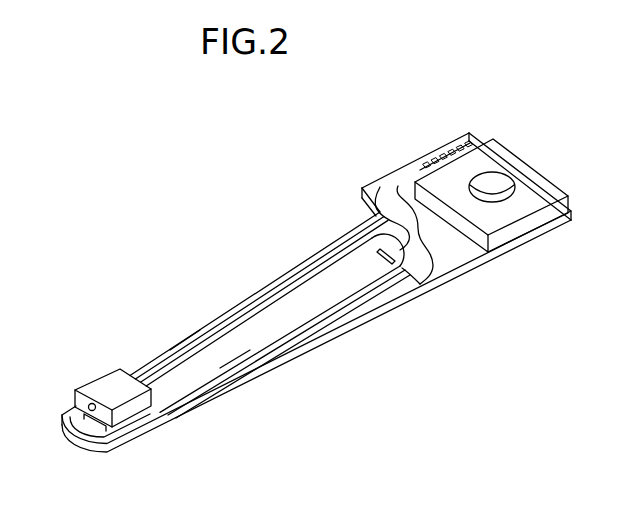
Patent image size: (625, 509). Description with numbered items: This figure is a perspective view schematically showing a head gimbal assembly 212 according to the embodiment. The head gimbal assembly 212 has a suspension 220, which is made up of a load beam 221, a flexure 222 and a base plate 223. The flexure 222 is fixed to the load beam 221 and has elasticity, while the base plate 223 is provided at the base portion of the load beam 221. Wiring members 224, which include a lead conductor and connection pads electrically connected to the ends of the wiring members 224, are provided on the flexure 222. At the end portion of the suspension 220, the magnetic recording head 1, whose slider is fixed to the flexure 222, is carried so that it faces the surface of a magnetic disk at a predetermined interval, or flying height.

The magnetic recording head 1 is at (106, 386).
The head gimbal assembly 212 is at (321, 164).
The suspension 220 is at (311, 250).
The load beam 221 is at (419, 279).
The flexure 222 is at (351, 312).
The base plate 223 is at (516, 211).
The wiring members 224 is at (230, 364).